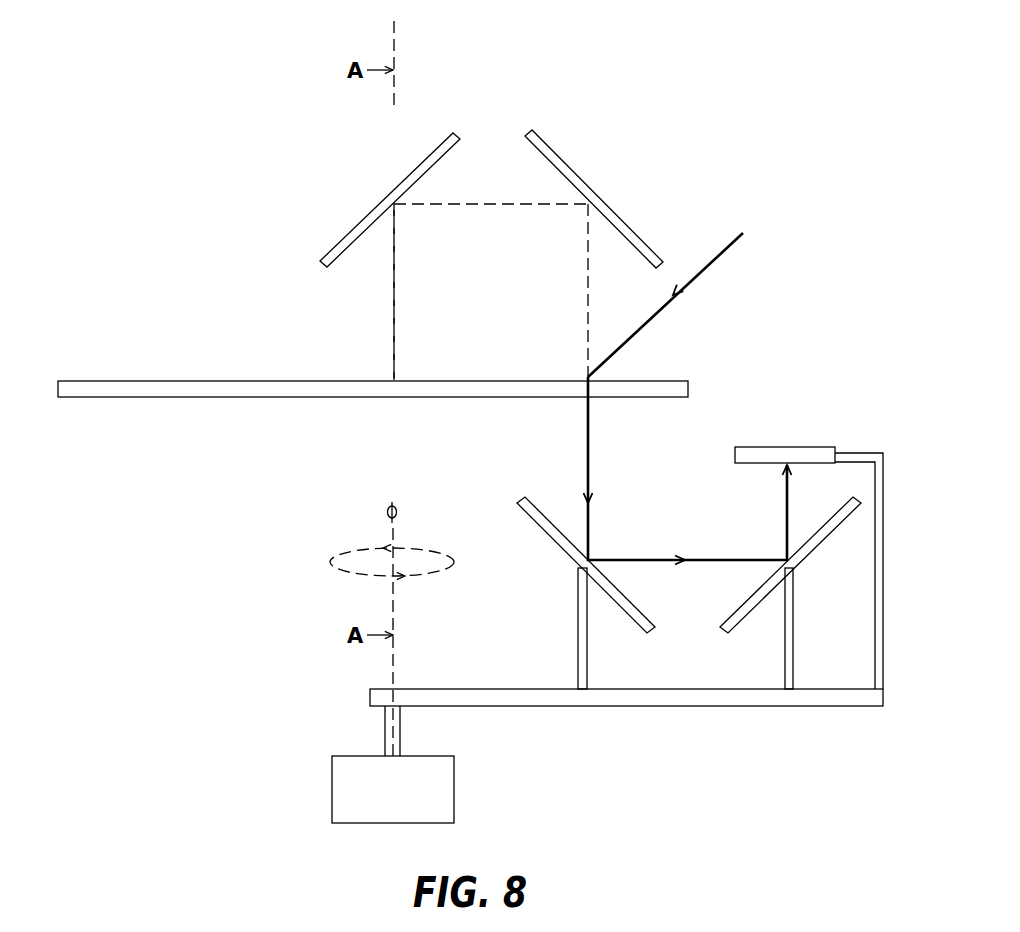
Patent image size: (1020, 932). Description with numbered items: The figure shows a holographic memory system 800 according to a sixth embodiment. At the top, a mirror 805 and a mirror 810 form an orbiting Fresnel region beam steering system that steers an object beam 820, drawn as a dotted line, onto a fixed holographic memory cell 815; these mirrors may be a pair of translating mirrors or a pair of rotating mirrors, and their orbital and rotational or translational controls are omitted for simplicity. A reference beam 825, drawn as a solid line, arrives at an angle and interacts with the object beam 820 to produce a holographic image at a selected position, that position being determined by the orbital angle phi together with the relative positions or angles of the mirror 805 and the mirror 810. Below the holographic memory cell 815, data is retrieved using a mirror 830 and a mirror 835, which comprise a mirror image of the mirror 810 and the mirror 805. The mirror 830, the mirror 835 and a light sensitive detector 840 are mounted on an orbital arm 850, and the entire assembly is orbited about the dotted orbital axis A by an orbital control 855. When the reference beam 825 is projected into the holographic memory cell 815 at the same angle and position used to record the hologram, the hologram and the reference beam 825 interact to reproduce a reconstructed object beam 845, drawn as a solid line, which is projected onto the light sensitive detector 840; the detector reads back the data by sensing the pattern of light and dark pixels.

The holographic memory system 800 is at (693, 782).
The mirror 805 is at (338, 237).
The mirror 810 is at (640, 232).
The holographic memory cell 815 is at (132, 380).
The object beam 820 is at (393, 325).
The reference beam 825 is at (732, 252).
The mirror 830 is at (543, 540).
The mirror 835 is at (820, 555).
The light sensitive detector 840 is at (789, 444).
The reconstructed object beam 845 is at (586, 437).
The orbital arm 850 is at (619, 708).
The orbital control 855 is at (330, 787).